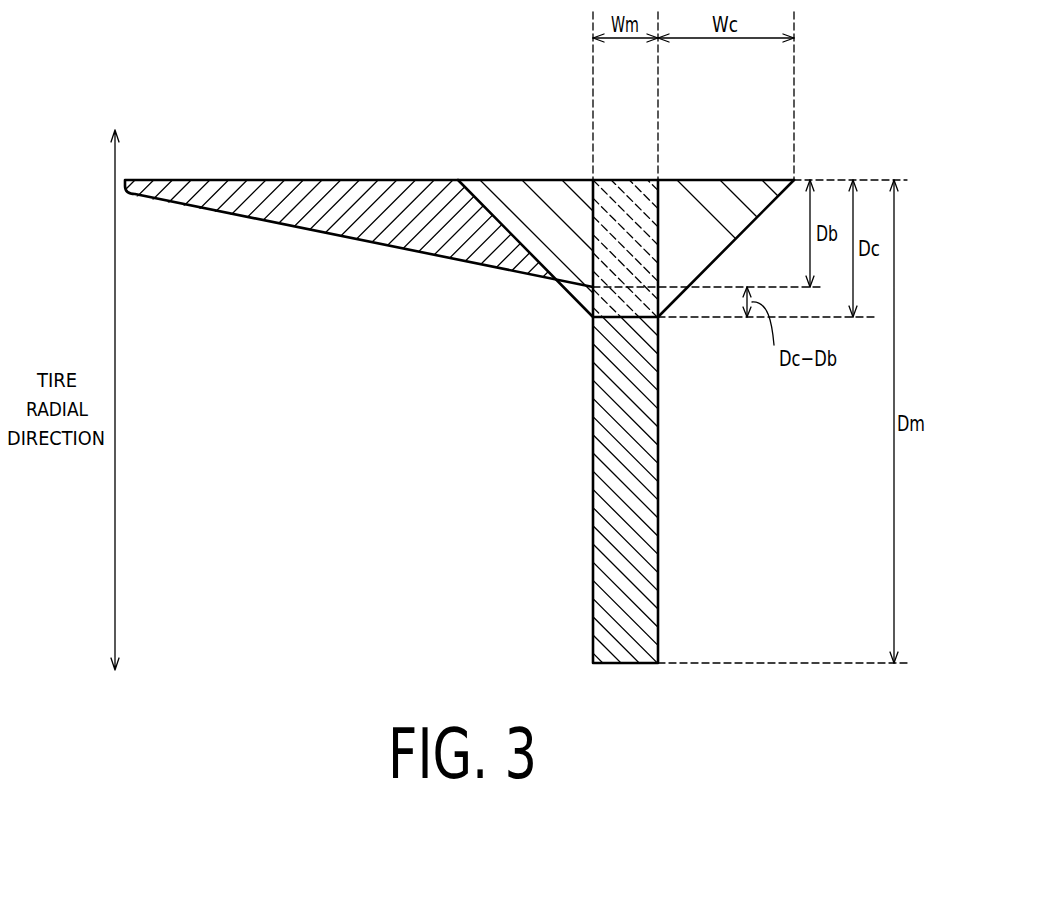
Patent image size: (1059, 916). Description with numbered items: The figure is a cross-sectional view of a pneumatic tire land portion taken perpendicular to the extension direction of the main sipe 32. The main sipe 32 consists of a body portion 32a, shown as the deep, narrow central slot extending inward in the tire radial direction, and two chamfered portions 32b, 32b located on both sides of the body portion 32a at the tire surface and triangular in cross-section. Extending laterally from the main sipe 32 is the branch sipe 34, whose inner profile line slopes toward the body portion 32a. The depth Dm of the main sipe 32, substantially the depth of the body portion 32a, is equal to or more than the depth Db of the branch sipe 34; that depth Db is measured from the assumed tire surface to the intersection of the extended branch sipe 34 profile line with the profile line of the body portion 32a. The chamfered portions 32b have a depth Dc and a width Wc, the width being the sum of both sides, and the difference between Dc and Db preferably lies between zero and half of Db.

The branch sipe 34 is at (310, 181).
The main sipe 32 is at (680, 394).
The body portion 32a is at (630, 179).
The chamfered portion 32b is at (555, 179).